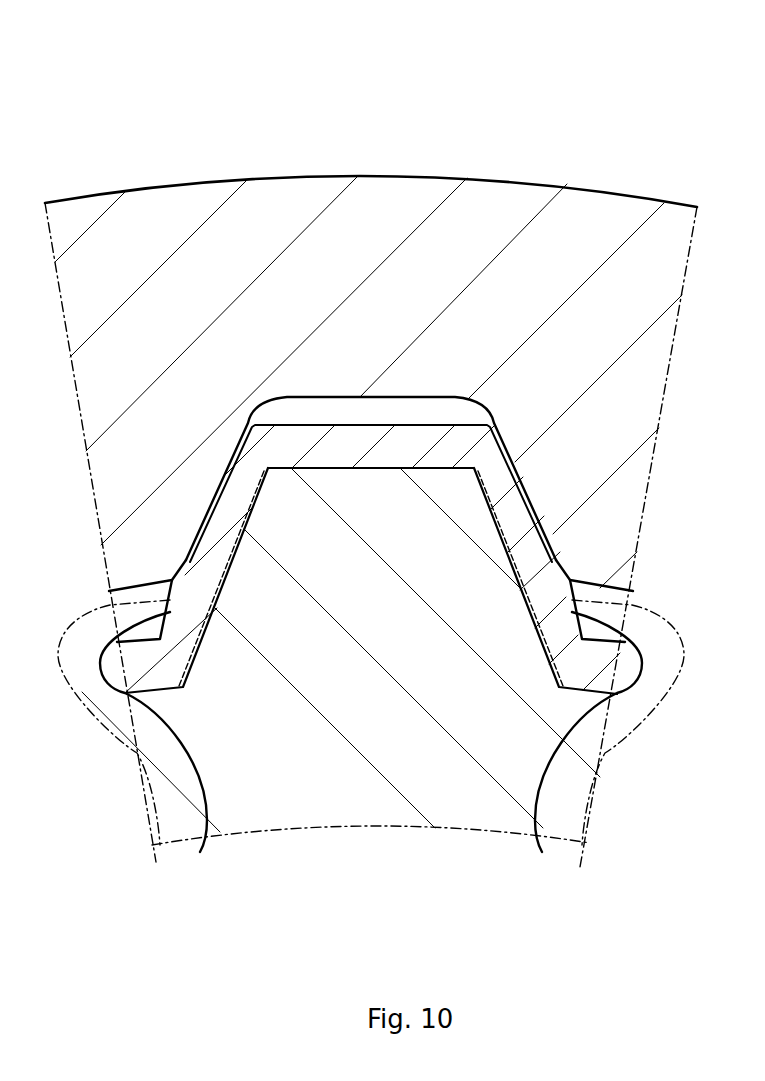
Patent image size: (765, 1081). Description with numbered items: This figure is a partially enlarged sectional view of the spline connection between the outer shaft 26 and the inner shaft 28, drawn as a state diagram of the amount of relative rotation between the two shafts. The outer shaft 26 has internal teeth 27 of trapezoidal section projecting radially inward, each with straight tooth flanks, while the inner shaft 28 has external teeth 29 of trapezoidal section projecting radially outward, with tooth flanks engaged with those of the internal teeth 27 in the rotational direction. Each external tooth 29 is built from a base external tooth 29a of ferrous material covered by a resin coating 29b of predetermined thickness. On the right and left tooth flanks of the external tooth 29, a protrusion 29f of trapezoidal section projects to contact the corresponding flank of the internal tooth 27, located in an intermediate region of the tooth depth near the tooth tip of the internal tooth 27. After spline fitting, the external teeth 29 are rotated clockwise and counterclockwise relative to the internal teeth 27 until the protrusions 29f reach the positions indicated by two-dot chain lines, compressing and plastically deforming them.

The outer shaft 26 is at (235, 262).
The internal teeth 27 is at (193, 543).
The inner shaft 28 is at (252, 730).
The external teeth 29 is at (371, 725).
The base external teeth 29a is at (250, 527).
The resin coating 29b is at (240, 485).
The protrusion 29f is at (165, 572).